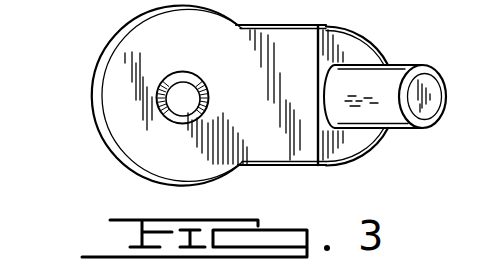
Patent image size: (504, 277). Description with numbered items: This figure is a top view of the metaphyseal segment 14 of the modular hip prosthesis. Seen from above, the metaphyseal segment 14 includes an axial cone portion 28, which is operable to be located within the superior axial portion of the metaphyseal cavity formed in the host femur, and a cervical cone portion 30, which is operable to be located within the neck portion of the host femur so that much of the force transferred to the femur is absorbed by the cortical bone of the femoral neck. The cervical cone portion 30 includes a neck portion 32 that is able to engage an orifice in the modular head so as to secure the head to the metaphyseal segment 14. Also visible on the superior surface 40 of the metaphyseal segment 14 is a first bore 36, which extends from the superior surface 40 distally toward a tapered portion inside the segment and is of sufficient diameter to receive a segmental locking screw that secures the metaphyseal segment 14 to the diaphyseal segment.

The metaphyseal segment 14 is at (133, 57).
The cervical cone portion 30 is at (93, 97).
The first bore 36 is at (163, 110).
The superior surface 40 is at (160, 156).
The axial cone portion 28 is at (352, 147).
The neck portion 32 is at (428, 97).